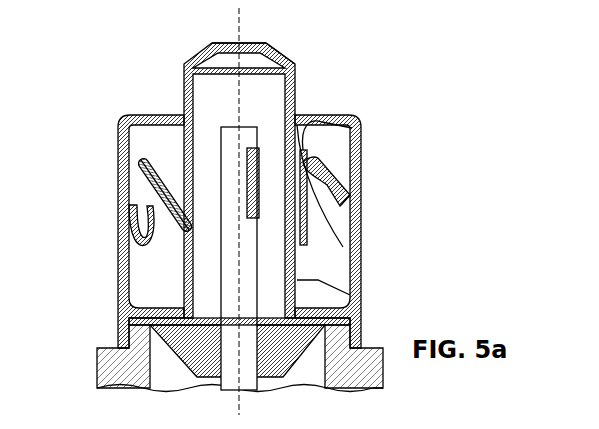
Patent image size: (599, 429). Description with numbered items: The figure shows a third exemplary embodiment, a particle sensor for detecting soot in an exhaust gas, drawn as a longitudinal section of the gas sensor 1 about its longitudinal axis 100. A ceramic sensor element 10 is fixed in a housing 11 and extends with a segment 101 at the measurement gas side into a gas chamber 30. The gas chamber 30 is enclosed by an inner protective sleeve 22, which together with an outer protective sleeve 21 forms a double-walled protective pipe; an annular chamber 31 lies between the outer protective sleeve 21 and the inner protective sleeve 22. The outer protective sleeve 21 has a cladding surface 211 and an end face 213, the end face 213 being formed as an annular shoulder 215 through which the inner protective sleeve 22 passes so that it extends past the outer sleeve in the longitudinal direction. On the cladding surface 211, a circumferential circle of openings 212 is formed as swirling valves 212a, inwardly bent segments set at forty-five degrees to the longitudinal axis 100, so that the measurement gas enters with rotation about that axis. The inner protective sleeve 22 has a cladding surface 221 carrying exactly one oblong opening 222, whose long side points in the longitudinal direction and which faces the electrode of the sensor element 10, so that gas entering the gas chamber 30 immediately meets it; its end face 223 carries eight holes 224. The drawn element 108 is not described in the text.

The gas sensor 1 is at (433, 153).
The sensor element 10 is at (237, 272).
The segment at the measurement gas side 101 is at (253, 384).
The housing 11 is at (110, 373).
The outer protective sleeve 21 is at (281, 231).
The cladding surface 211 is at (361, 247).
The inner protective sleeve 22 is at (365, 292).
The cladding surface 221 is at (350, 295).
The openings 212 is at (359, 185).
The swirling valves 212a is at (352, 181).
The end face 213 is at (120, 167).
The annular shoulder 215 is at (147, 117).
The opening 222 is at (358, 128).
The end face 223 is at (291, 59).
The holes 224 is at (250, 45).
The gas chamber 30 is at (232, 105).
The annular chamber 31 is at (140, 290).
The longitudinal axis 100 is at (237, 36).
The locking tab 108 is at (263, 152).